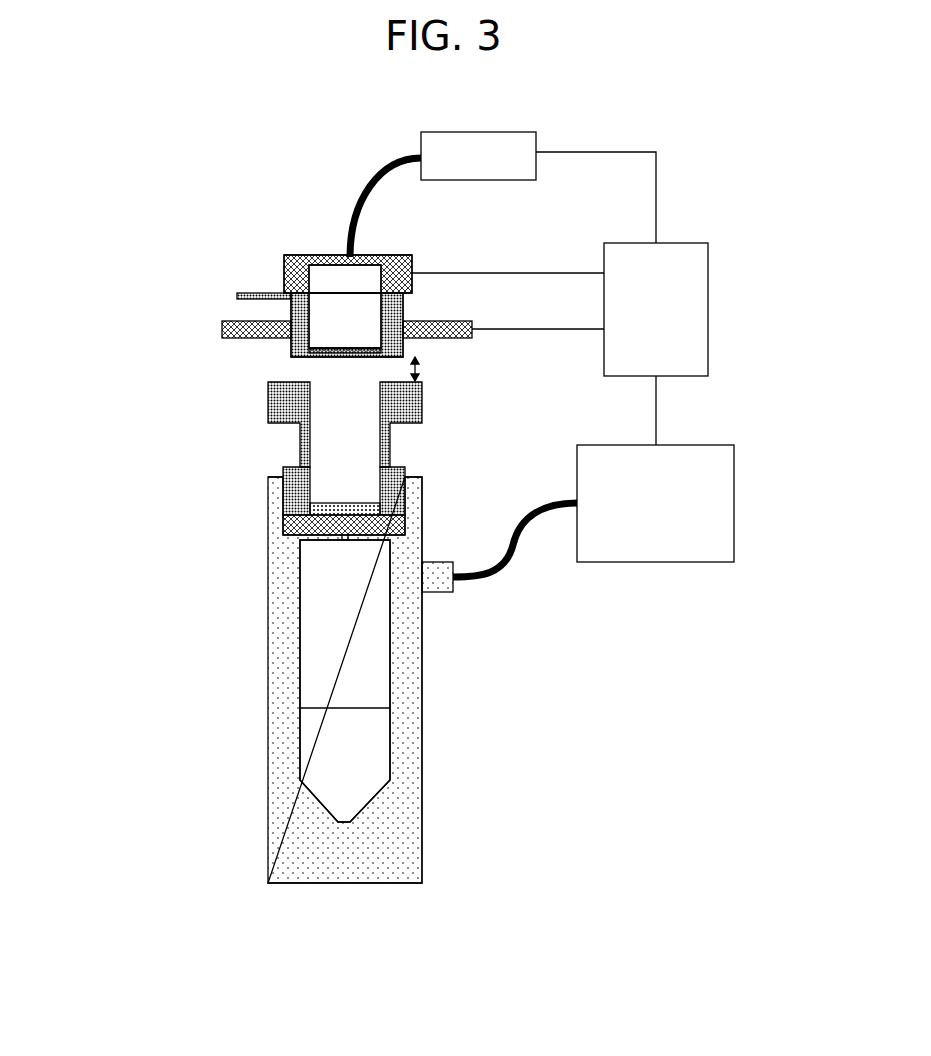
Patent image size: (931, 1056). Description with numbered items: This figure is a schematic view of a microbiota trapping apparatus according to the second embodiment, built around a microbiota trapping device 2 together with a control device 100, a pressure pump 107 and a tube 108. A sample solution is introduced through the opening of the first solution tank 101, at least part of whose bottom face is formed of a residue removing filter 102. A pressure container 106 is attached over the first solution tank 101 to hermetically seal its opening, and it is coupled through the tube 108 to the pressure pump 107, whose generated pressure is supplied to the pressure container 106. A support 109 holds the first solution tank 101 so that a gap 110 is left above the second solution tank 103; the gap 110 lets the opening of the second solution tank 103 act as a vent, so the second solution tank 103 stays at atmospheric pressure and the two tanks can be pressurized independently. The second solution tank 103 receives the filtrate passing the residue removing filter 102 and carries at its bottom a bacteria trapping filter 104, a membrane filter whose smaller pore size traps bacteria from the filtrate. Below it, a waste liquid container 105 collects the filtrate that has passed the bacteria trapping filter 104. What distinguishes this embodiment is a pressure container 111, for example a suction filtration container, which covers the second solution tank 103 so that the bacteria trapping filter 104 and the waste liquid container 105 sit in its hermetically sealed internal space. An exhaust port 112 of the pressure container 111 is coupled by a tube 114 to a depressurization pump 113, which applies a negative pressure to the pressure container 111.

The microbiota trapping device 2 is at (122, 372).
The control device 100 is at (690, 241).
The first solution tank 101 is at (237, 295).
The residue removing filter 102 is at (329, 352).
The second solution tank 103 is at (268, 400).
The bacteria trapping filter 104 is at (325, 501).
The waste liquid container 105 is at (299, 632).
The pressure container 106 is at (284, 264).
The pressure pump 107 is at (482, 130).
The tube 108 is at (372, 196).
The support 109 is at (222, 330).
The gap 110 is at (421, 369).
The pressure container 111 is at (268, 677).
The exhaust port 112 is at (445, 593).
The depressurization pump 113 is at (720, 443).
The tube 114 is at (515, 560).